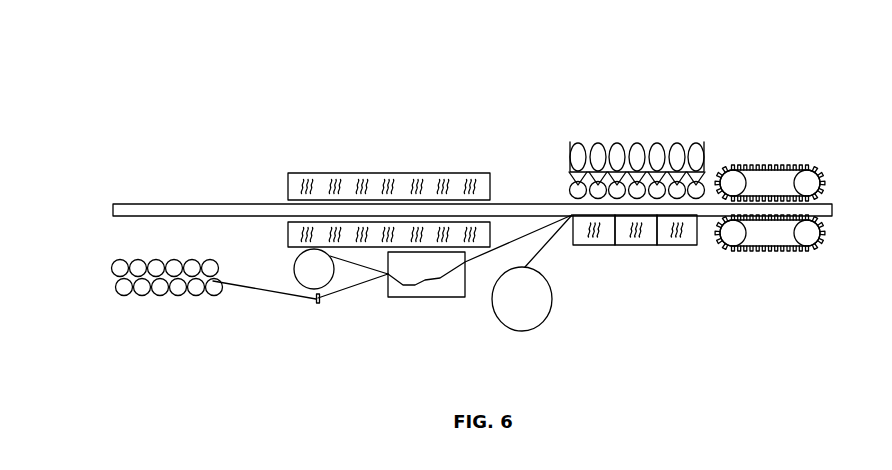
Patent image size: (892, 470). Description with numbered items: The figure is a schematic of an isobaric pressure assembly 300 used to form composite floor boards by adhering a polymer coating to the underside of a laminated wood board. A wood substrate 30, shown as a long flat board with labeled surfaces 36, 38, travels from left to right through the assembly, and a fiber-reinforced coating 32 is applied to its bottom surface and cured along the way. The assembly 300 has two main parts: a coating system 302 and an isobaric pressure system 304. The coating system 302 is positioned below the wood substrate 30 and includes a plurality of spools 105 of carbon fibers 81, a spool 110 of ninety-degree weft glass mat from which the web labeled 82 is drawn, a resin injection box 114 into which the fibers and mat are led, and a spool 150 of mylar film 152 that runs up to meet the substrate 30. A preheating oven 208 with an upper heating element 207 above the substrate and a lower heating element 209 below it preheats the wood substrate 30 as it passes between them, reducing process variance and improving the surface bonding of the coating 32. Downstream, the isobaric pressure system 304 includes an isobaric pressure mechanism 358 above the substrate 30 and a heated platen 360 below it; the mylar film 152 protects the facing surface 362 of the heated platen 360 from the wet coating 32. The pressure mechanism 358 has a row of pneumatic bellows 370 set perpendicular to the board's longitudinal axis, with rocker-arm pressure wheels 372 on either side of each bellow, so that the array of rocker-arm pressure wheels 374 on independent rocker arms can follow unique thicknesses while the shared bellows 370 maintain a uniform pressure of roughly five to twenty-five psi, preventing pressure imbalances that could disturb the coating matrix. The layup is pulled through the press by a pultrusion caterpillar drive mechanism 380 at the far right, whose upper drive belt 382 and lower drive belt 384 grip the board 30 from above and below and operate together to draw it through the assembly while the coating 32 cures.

The isobaric pressure assembly 300 is at (154, 63).
The wood substrate 30 is at (471, 199).
The first surface of substrate 36 is at (471, 199).
The second surface of substrate 38 is at (160, 216).
The fiber-reinforced coating 32 is at (836, 220).
The upper heating element 207 is at (425, 186).
The preheating oven 208 is at (389, 149).
The lower heating element 209 is at (478, 230).
The spools of carbon fibers 105 is at (125, 297).
The carbon fibers 81 is at (248, 286).
The spool of weft glass mat 110 is at (293, 273).
The coating system 302 is at (299, 316).
The web path 82 is at (353, 264).
The resin injection box 114 is at (427, 300).
The spool of mylar film 150 is at (522, 332).
The mylar film 152 is at (553, 237).
The isobaric pressure mechanism 358 is at (630, 133).
The pneumatic bellows 370 is at (630, 146).
The rocker-arm pressure wheels 372 is at (630, 155).
The array of rocker-arm pressure wheels 374 is at (568, 191).
The isobaric pressure system 304 is at (641, 274).
The heated platen 360 is at (635, 254).
The facing surface of heated platen 362 is at (650, 240).
The pultrusion caterpillar drive mechanism 380 is at (776, 201).
The upper drive belt 382 is at (760, 165).
The lower drive belt 384 is at (770, 252).